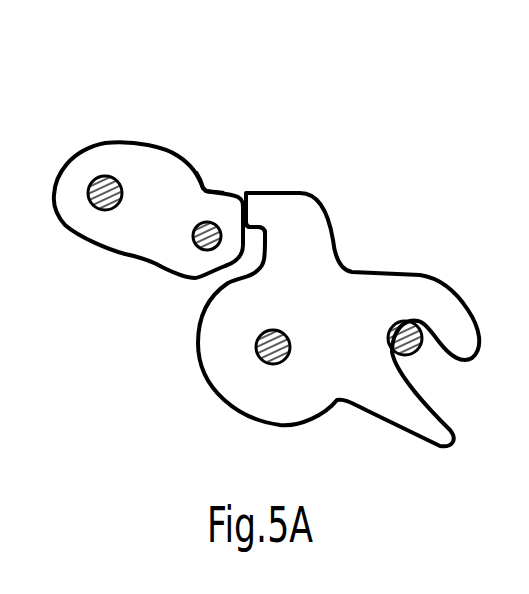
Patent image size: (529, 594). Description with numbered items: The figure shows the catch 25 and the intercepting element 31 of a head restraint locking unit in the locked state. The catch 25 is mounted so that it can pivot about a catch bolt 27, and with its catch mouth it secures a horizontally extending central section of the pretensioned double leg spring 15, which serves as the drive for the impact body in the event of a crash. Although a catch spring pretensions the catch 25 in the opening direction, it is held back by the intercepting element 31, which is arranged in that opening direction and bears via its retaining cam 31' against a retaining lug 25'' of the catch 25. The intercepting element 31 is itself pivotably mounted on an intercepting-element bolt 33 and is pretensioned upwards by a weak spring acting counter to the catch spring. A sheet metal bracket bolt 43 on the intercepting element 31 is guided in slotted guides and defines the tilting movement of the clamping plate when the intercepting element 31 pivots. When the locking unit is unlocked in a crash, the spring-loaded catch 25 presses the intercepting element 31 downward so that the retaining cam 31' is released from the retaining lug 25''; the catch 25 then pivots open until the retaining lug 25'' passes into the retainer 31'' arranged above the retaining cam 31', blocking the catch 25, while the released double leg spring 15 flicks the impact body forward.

The double leg spring 15 is at (422, 348).
The catch 25 is at (338, 339).
The retaining lug 25'' is at (293, 166).
The catch bolt 27 is at (261, 362).
The intercepting element 31 is at (148, 252).
The retaining cam 31' is at (251, 144).
The retainer 31'' is at (199, 113).
The intercepting-element bolt 33 is at (107, 176).
The sheet metal bracket bolt 43 is at (204, 250).